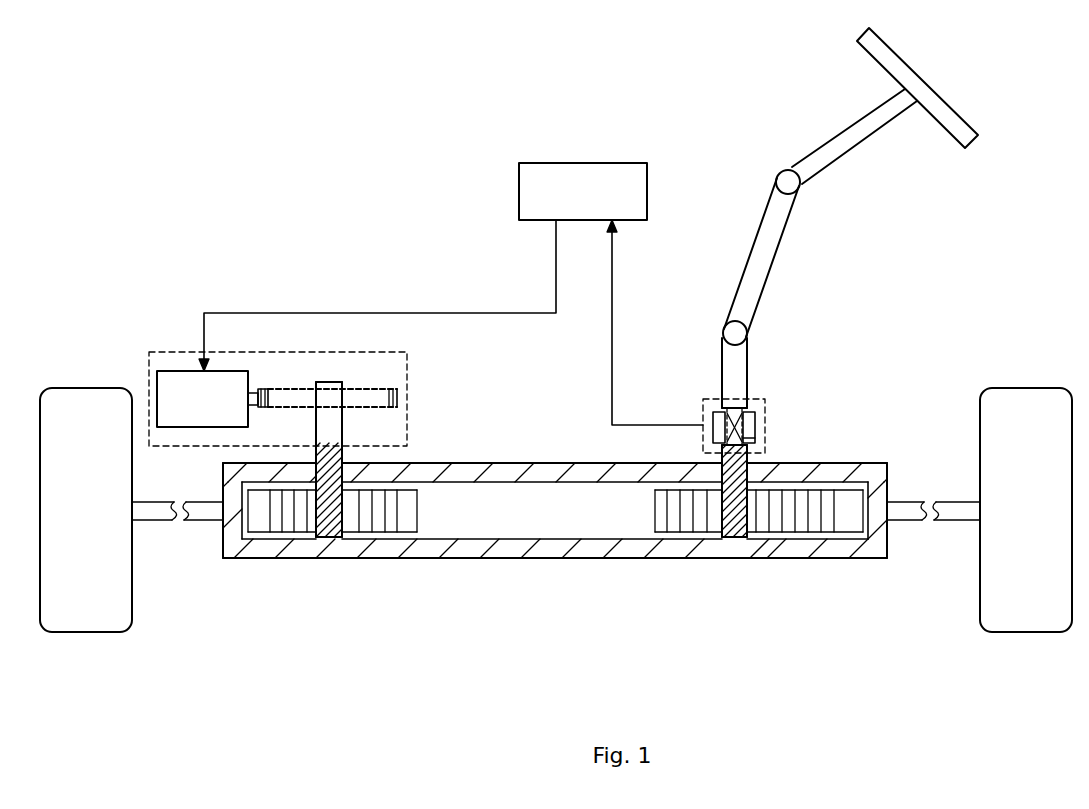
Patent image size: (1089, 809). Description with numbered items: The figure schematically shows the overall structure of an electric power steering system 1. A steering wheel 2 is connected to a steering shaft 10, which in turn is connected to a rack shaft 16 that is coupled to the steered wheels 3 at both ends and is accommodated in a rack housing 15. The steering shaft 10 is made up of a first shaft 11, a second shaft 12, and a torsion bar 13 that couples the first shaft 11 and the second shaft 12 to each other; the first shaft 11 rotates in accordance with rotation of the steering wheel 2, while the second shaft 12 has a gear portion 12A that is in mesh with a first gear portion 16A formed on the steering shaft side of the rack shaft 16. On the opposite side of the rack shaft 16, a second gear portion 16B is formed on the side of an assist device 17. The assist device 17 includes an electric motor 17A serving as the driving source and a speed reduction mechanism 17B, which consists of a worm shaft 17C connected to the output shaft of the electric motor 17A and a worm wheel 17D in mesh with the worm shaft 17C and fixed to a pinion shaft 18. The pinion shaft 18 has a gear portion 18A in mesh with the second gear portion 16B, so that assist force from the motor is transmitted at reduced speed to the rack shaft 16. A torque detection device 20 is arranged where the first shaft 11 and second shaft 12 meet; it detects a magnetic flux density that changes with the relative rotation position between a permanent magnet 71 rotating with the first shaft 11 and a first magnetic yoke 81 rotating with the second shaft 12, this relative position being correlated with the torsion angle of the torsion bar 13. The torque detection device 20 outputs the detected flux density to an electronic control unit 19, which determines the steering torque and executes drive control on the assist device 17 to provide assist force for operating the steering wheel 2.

The electric power steering system 1 is at (285, 90).
The steering wheel 2 is at (965, 147).
The steered wheels 3 is at (83, 632).
The steering shaft 10 is at (771, 165).
The first shaft 11 is at (722, 375).
The second shaft 12 is at (700, 514).
The gear portion 12A is at (727, 520).
The torsion bar 13 is at (745, 433).
The rack housing 15 is at (543, 558).
The rack shaft 16 is at (555, 540).
The first gear portion 16A is at (805, 527).
The second gear portion 16B is at (377, 529).
The assist device 17 is at (307, 373).
The electric motor 17A is at (165, 385).
The speed reduction mechanism 17B is at (391, 384).
The worm shaft 17C is at (372, 382).
The worm wheel 17D is at (430, 398).
The pinion shaft 18 is at (329, 459).
The gear portion 18A is at (344, 462).
The electronic control unit 19 is at (519, 190).
The torque detection device 20 is at (765, 400).
The permanent magnet 71 is at (747, 415).
The first magnetic yoke 81 is at (755, 438).